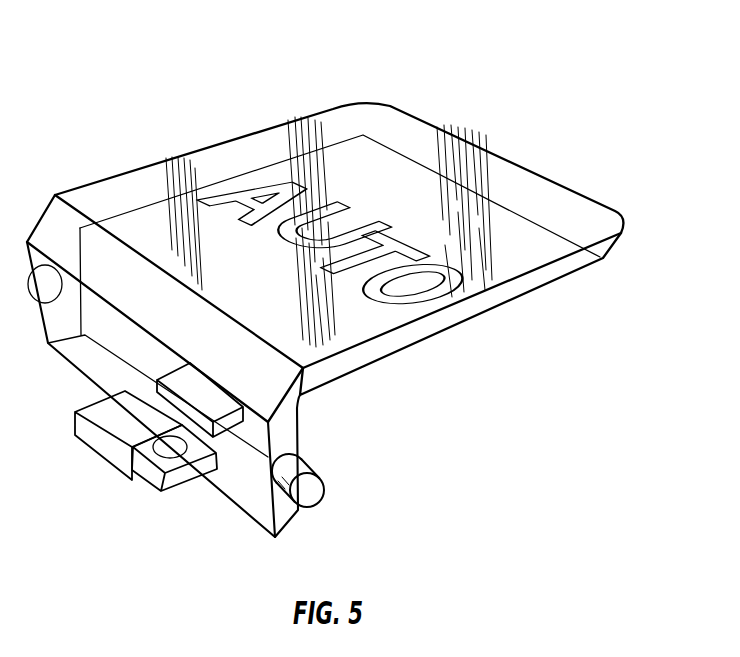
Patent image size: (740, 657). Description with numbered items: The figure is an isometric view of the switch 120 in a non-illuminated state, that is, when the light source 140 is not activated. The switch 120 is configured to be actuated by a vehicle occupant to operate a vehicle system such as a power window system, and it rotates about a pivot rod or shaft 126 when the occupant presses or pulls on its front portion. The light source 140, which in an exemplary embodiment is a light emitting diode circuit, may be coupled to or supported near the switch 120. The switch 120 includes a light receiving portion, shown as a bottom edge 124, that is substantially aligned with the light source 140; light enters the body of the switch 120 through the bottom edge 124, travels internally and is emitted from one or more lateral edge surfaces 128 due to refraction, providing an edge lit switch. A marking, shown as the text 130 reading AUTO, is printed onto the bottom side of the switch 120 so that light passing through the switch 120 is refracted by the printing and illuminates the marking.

The switch 120 is at (448, 92).
The bottom edge 124 is at (288, 518).
The pivot rod or shaft 126 is at (313, 492).
The lateral edge surfaces 128 is at (557, 268).
The text 130 is at (467, 292).
The light source 140 is at (152, 465).